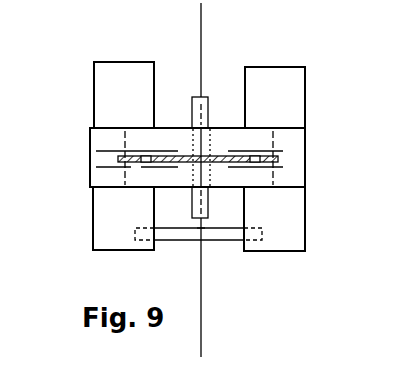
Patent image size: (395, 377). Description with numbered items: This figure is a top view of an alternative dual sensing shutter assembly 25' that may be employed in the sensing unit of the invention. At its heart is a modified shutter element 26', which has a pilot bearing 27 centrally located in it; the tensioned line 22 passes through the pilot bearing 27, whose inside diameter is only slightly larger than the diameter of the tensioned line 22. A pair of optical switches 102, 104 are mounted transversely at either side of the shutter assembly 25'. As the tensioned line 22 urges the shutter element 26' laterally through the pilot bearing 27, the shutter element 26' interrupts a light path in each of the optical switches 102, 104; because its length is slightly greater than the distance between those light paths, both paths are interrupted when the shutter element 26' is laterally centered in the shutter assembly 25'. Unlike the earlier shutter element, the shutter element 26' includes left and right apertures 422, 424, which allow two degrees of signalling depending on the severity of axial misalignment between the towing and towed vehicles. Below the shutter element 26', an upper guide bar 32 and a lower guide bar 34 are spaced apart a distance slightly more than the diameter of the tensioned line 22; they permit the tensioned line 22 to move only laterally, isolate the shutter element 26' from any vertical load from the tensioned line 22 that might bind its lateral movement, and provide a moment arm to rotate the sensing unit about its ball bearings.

The tensioned line 22 is at (204, 326).
The shutter assembly 25' is at (153, 176).
The shutter element 26' is at (237, 150).
The pilot bearing 27 is at (207, 90).
The upper guide bar 32 is at (208, 243).
The lower guide bar 34 is at (240, 275).
The optical switch 102 is at (110, 57).
The optical switch 104 is at (307, 95).
The left aperture 422 is at (143, 155).
The right aperture 424 is at (253, 153).